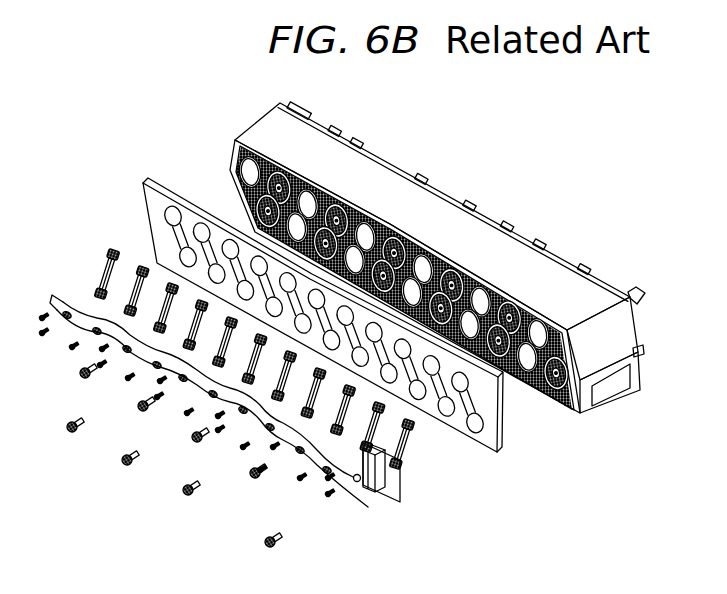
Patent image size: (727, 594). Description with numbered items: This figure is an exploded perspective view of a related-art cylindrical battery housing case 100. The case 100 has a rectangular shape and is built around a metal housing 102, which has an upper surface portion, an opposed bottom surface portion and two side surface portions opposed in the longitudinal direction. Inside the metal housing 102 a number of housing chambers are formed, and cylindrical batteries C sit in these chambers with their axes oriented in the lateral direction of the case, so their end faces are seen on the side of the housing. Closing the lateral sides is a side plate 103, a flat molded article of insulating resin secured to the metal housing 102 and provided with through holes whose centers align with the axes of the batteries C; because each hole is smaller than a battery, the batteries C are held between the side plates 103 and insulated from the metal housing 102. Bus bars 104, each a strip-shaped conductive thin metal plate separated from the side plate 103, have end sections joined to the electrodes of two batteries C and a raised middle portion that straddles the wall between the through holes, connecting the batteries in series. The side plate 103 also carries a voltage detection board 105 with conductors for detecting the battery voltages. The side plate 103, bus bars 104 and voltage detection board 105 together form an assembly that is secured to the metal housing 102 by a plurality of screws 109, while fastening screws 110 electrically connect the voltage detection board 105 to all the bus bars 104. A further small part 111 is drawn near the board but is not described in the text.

The cylindrical battery housing case 100 is at (482, 153).
The metal housing 102 is at (257, 124).
The side plate 103 is at (499, 432).
The bus bar 104 is at (415, 445).
The voltage detection board 105 is at (401, 480).
The screw 109 is at (127, 470).
The fastening screw 110 is at (328, 498).
The fastener 111 is at (334, 482).
The cylindrical battery C is at (523, 362).